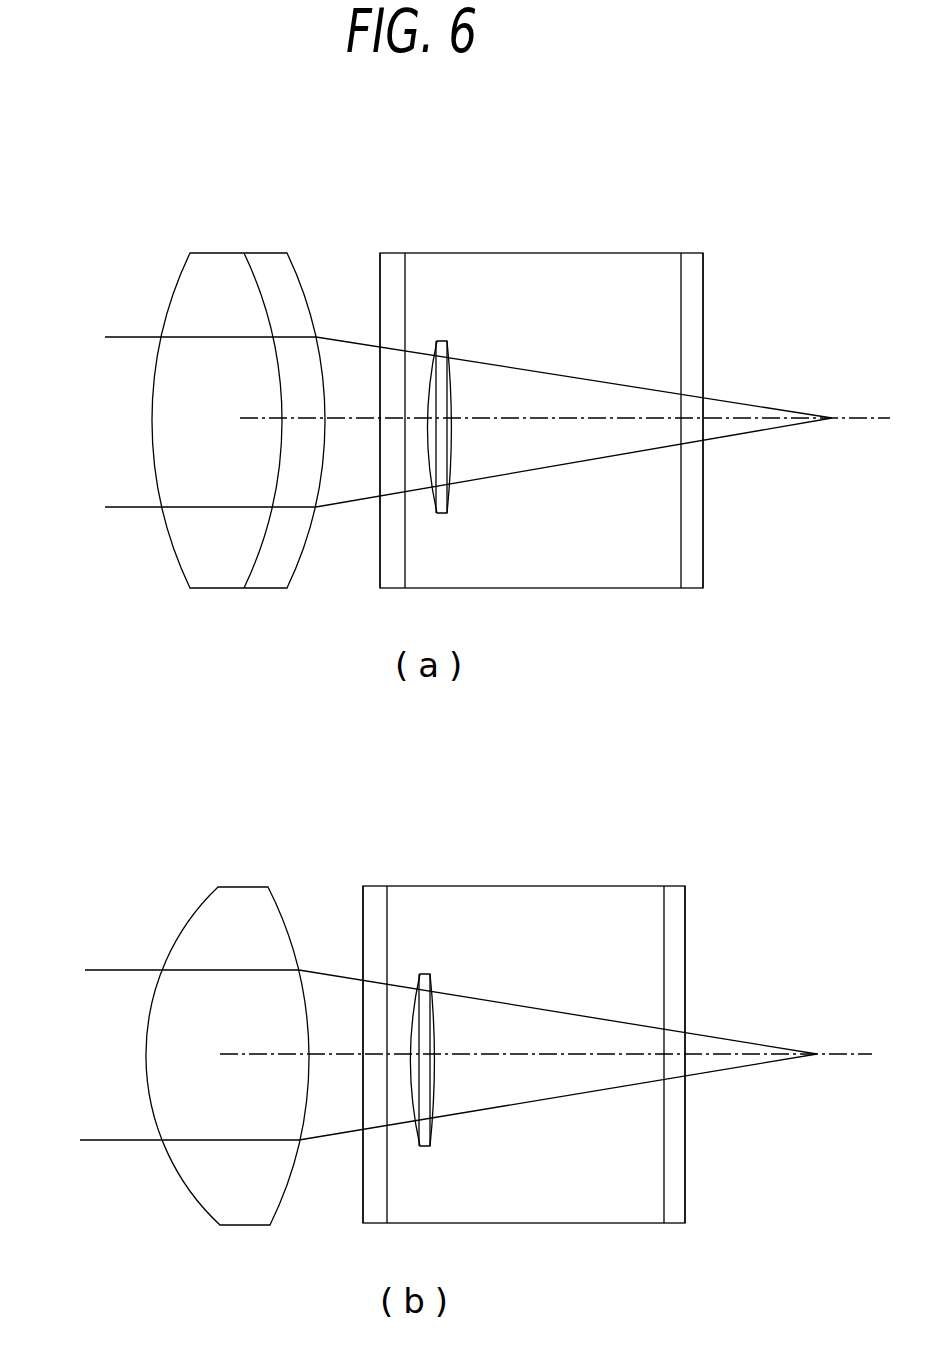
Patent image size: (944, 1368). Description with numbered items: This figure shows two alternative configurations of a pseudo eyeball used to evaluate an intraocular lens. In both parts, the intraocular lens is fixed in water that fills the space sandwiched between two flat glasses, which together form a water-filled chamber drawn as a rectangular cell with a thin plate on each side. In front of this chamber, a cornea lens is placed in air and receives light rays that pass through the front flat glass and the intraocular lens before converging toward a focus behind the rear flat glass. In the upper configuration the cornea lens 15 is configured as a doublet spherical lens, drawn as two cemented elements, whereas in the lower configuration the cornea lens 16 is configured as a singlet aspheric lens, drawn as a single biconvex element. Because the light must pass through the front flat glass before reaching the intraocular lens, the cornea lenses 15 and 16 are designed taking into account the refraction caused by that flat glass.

The cornea lens 15 is at (168, 305).
The cornea lens 16 is at (170, 942).